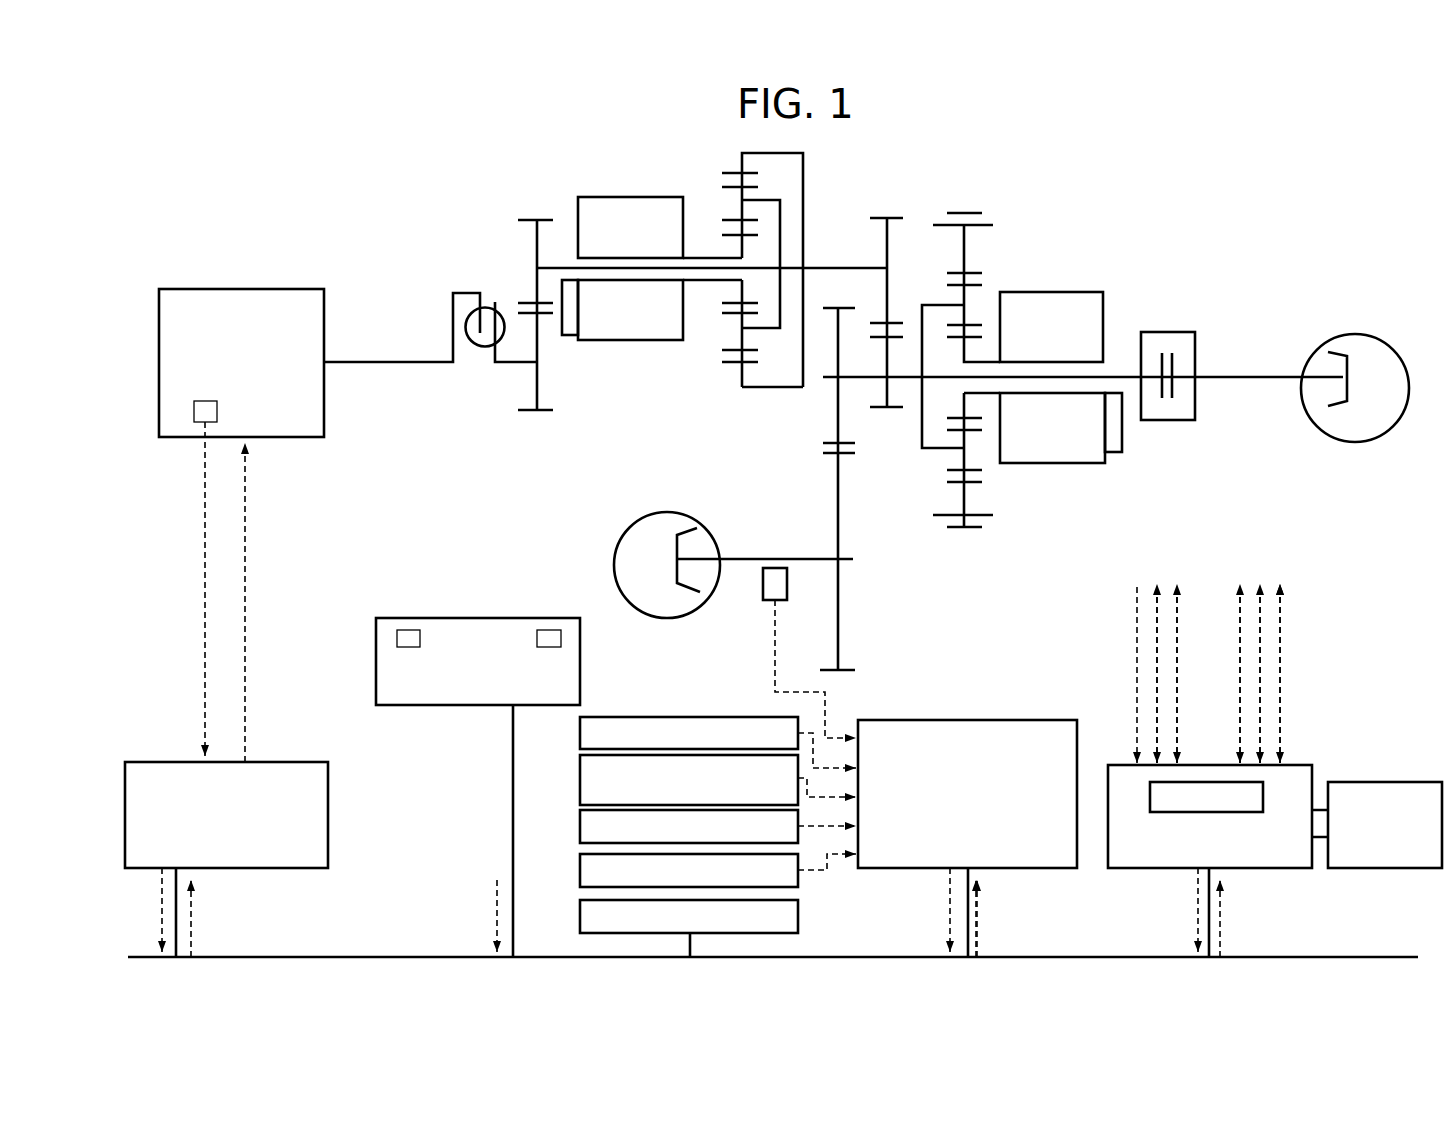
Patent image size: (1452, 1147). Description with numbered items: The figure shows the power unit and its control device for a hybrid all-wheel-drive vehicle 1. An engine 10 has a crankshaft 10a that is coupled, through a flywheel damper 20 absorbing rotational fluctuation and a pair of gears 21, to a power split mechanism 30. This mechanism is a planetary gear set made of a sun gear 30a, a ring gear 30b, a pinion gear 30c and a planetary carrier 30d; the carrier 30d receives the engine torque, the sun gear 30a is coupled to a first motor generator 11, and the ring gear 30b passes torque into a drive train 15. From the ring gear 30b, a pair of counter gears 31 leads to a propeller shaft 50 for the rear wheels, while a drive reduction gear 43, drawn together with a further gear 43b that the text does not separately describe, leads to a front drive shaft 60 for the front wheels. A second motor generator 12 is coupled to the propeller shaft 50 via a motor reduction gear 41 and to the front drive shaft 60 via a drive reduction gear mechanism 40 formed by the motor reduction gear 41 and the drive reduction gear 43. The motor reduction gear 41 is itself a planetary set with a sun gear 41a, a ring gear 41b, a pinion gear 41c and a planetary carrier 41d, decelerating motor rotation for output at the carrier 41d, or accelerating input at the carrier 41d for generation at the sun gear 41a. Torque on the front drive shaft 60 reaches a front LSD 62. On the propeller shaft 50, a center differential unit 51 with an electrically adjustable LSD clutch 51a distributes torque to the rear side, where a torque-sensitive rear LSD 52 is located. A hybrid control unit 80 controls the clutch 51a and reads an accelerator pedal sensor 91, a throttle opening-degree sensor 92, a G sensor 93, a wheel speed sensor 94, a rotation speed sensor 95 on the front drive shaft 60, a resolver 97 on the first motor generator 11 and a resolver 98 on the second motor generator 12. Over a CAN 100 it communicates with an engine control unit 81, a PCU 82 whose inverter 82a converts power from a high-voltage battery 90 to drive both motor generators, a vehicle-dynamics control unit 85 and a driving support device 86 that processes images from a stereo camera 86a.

The hybrid all-wheel-drive vehicle 1 is at (783, 547).
The engine 10 is at (245, 289).
The crankshaft 10a is at (437, 362).
The first motor generator 11 is at (640, 341).
The second motor generator 12 is at (1065, 292).
The drive train 15 is at (922, 205).
The flywheel damper 20 is at (482, 304).
The pair of gears 21 is at (519, 249).
The power split mechanism 30 is at (747, 277).
The sun gear 30a is at (740, 290).
The ring gear 30b is at (740, 378).
The pinion gear 30c is at (740, 330).
The planetary carrier 30d is at (803, 283).
The pair of gears (counter gears) 31 is at (863, 231).
The drive reduction gear mechanism 40 is at (991, 250).
The motor reduction gear 41 is at (994, 237).
The sun gear 41a is at (1003, 403).
The ring gear 41b is at (966, 258).
The pinion gear 41c is at (1022, 460).
The planetary carrier 41d is at (922, 410).
The drive reduction gear 43 is at (828, 489).
The counter driven gear 43b is at (840, 604).
The propeller shaft 50 is at (1235, 380).
The center differential unit 51 is at (1173, 380).
The LSD clutch 51a is at (1172, 349).
The rear LSD 52 is at (1340, 335).
The front drive shaft 60 is at (770, 555).
The front LSD 62 is at (616, 540).
The hybrid control unit 80 is at (885, 718).
The engine control unit 81 is at (308, 760).
The PCU 82 is at (1200, 756).
The inverter 82a is at (1215, 782).
The vehicle-dynamics control unit 85 is at (580, 918).
The driving support device 86 is at (514, 763).
The stereo camera 86a is at (545, 628).
The high-voltage battery 90 is at (1385, 870).
The accelerator pedal sensor 91 is at (580, 733).
The throttle opening-degree sensor 92 is at (580, 777).
The G sensor 93 is at (580, 826).
The wheel speed sensor 94 is at (580, 869).
The rotation speed sensor 95 is at (762, 592).
The resolver 97 is at (572, 338).
The resolver 98 is at (1113, 455).
The CAN 100 is at (1155, 955).